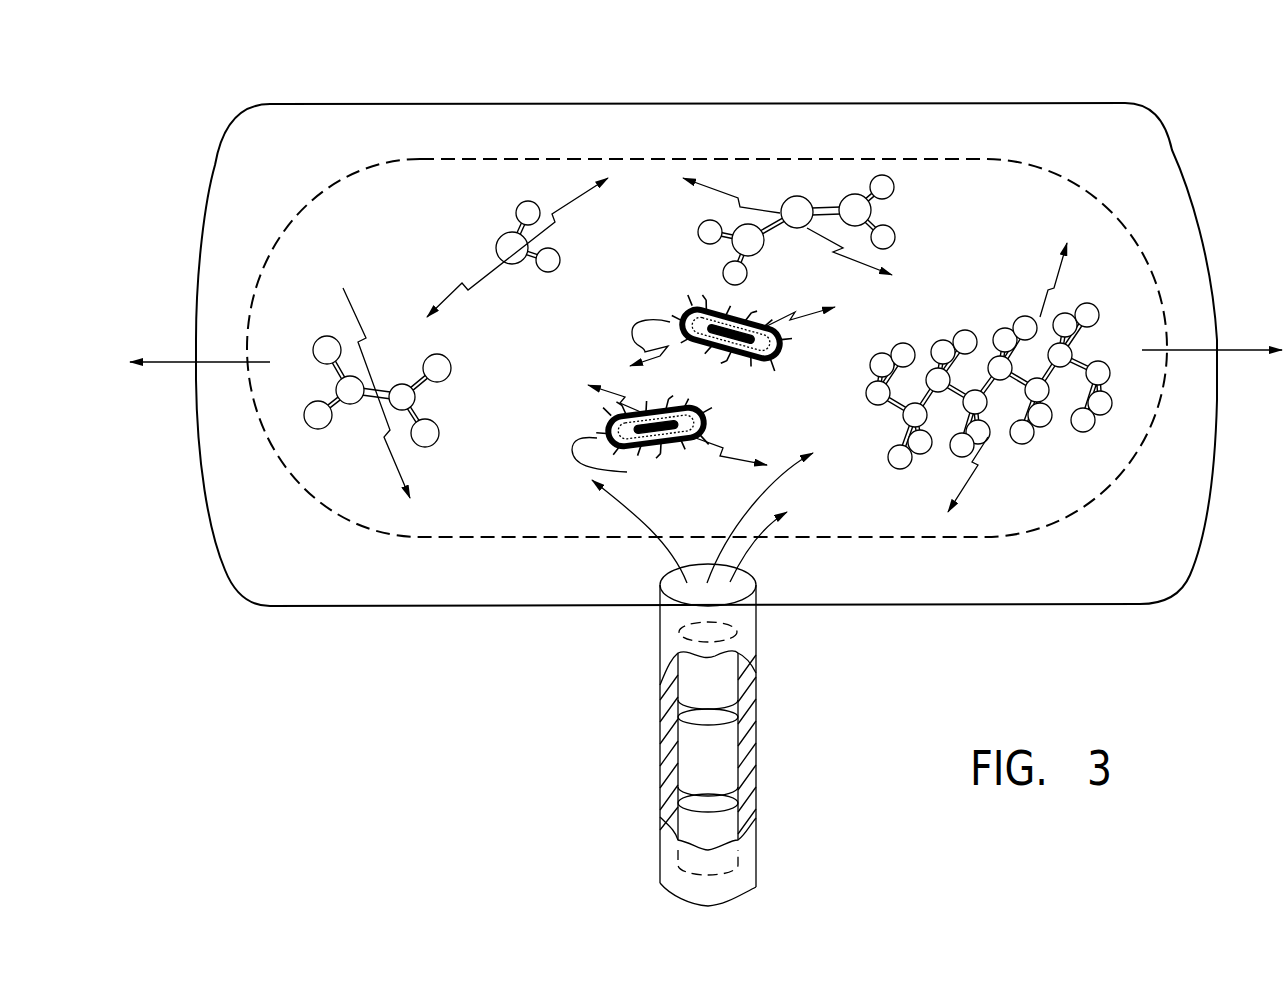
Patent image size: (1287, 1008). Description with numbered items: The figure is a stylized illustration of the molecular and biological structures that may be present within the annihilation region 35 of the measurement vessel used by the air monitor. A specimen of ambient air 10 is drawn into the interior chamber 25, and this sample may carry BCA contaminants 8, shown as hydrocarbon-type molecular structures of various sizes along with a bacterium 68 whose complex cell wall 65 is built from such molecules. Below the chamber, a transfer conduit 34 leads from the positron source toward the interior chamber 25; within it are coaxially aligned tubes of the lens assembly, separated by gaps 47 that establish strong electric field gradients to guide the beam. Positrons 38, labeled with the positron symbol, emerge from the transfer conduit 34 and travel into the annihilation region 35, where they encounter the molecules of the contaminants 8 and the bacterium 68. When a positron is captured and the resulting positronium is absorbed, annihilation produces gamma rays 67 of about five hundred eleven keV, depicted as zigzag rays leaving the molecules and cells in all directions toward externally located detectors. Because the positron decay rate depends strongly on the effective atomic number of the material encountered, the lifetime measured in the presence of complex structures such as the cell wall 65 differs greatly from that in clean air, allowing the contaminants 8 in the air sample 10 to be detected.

The BCA contaminants 8 is at (803, 188).
The specimen of ambient air 10 is at (343, 250).
The interior chamber 25 is at (987, 100).
The transfer conduit 34 is at (657, 783).
The annihilation region 35 is at (595, 160).
The positrons 38 is at (560, 495).
The gaps 47 is at (737, 792).
The cell wall 65 is at (727, 360).
The gamma rays 67 is at (390, 430).
The bacterium 68 is at (688, 313).